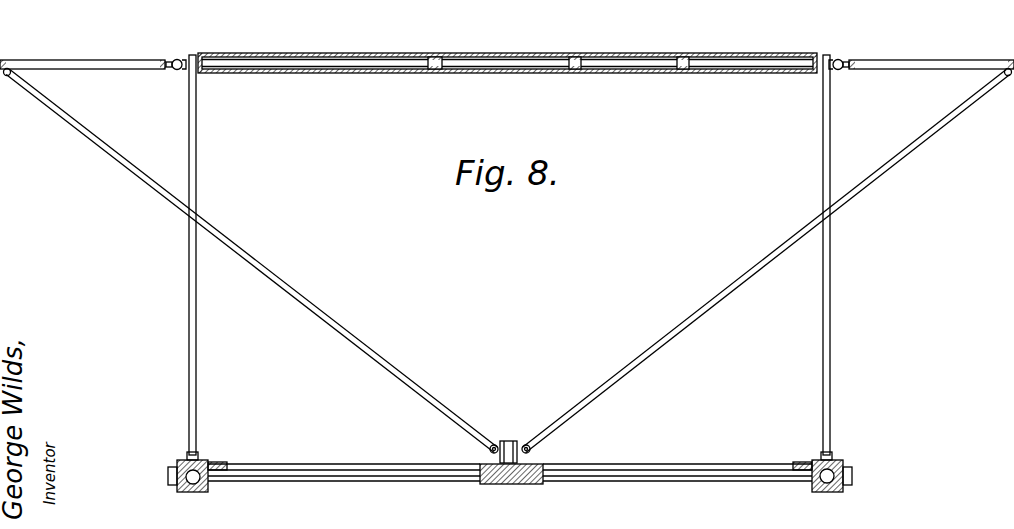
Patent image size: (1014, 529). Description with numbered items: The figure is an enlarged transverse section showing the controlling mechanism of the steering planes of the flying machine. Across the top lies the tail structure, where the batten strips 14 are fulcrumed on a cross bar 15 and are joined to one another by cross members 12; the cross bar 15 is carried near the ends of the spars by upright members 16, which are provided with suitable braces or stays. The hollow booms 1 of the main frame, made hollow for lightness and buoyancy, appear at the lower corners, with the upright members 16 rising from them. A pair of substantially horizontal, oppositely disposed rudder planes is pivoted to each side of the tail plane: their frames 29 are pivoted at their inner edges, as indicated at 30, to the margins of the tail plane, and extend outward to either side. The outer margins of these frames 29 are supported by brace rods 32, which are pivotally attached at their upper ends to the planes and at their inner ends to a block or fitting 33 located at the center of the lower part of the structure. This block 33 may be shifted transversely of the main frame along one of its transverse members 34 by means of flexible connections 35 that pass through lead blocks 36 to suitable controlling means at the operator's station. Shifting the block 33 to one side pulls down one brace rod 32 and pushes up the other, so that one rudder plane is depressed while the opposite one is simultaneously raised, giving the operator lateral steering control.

The boom 1 is at (168, 473).
The cross member 12 is at (576, 56).
The batten strip 14 is at (437, 56).
The cross bar 15 is at (388, 69).
The upright member 16 is at (197, 166).
The rudder plane frame 29 is at (81, 60).
The pivot 30 is at (182, 58).
The brace rod 32 is at (257, 252).
The block 33 is at (512, 441).
The transverse member 34 is at (422, 482).
The flexible connection 35 is at (378, 465).
The lead block 36 is at (224, 463).